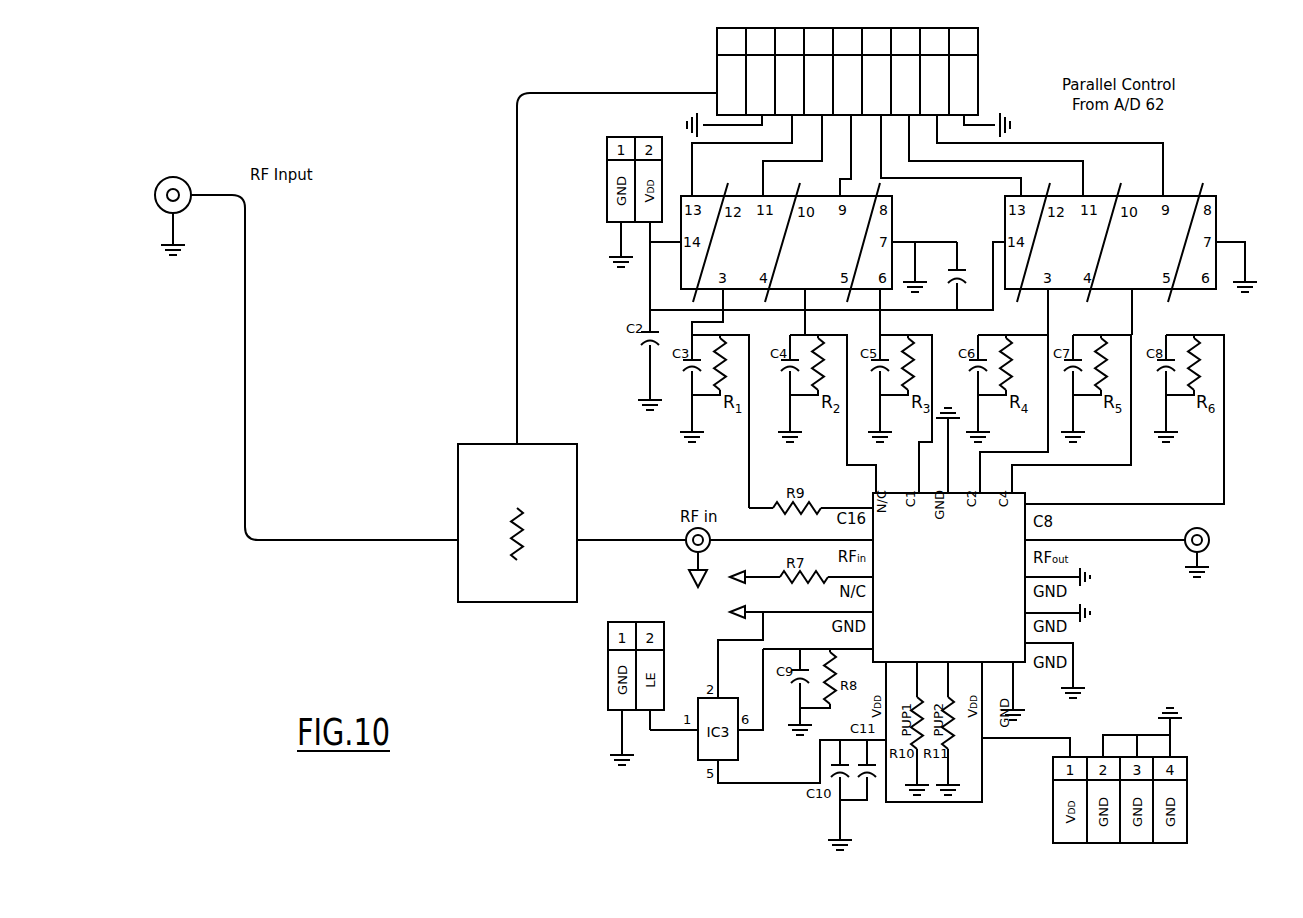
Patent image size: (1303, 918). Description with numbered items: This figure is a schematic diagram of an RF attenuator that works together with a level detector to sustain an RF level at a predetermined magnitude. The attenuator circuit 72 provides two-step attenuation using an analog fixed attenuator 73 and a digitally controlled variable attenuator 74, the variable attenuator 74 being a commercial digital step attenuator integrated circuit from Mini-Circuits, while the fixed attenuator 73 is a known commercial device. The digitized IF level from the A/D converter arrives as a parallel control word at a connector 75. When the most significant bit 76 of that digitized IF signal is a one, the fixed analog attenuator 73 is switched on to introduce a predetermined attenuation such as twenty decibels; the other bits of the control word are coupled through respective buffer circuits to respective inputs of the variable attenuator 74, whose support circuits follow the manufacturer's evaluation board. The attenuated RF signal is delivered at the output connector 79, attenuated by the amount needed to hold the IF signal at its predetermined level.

The attenuator circuit 72 is at (456, 89).
The fixed attenuator 73 is at (483, 444).
The variable attenuator 74 is at (1073, 643).
The connector 75 is at (832, 68).
The most significant bit 76 is at (715, 73).
The output connector 79 is at (1210, 531).